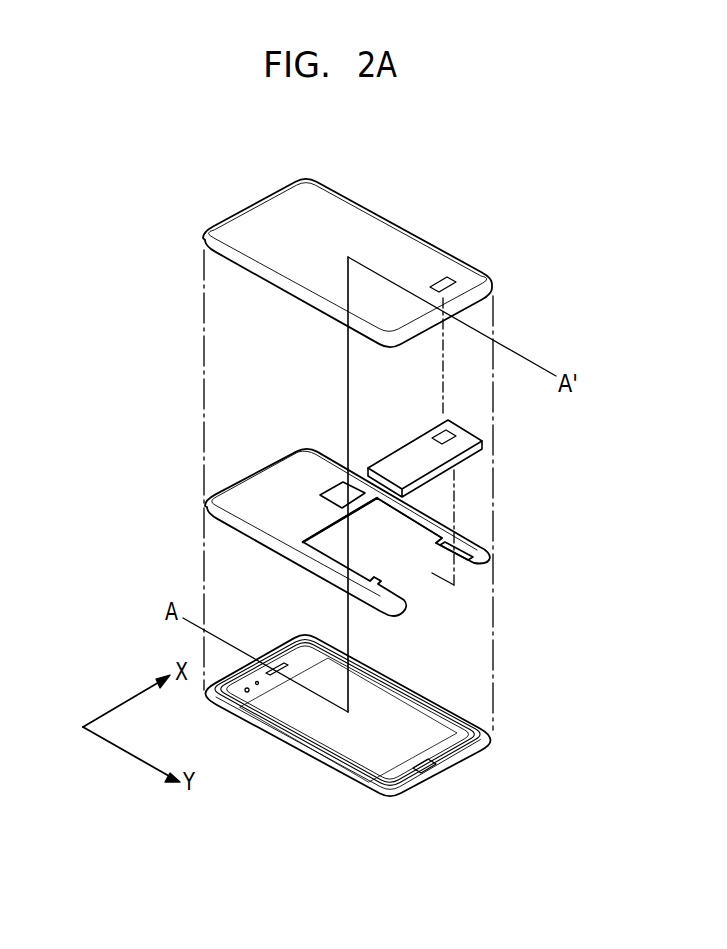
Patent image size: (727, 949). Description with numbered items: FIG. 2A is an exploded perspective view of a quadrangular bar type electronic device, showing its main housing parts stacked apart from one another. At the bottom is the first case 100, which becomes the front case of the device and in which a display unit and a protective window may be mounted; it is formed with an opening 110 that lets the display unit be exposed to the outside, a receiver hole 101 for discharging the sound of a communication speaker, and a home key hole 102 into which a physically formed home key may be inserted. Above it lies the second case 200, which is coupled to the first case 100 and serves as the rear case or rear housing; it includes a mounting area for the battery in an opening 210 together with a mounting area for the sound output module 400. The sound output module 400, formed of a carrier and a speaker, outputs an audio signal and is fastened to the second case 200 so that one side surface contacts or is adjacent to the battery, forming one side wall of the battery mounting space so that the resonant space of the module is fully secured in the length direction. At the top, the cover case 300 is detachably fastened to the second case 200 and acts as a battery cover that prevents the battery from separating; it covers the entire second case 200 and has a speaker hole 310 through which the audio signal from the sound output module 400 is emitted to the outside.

The first case 100 is at (492, 738).
The receiver hole 101 is at (285, 668).
The home key hole 102 is at (433, 763).
The opening 110 is at (320, 740).
The second case 200 is at (483, 557).
The opening 210 is at (410, 530).
The cover case 300 is at (492, 280).
The speaker hole 310 is at (447, 277).
The sound output module 400 is at (481, 442).